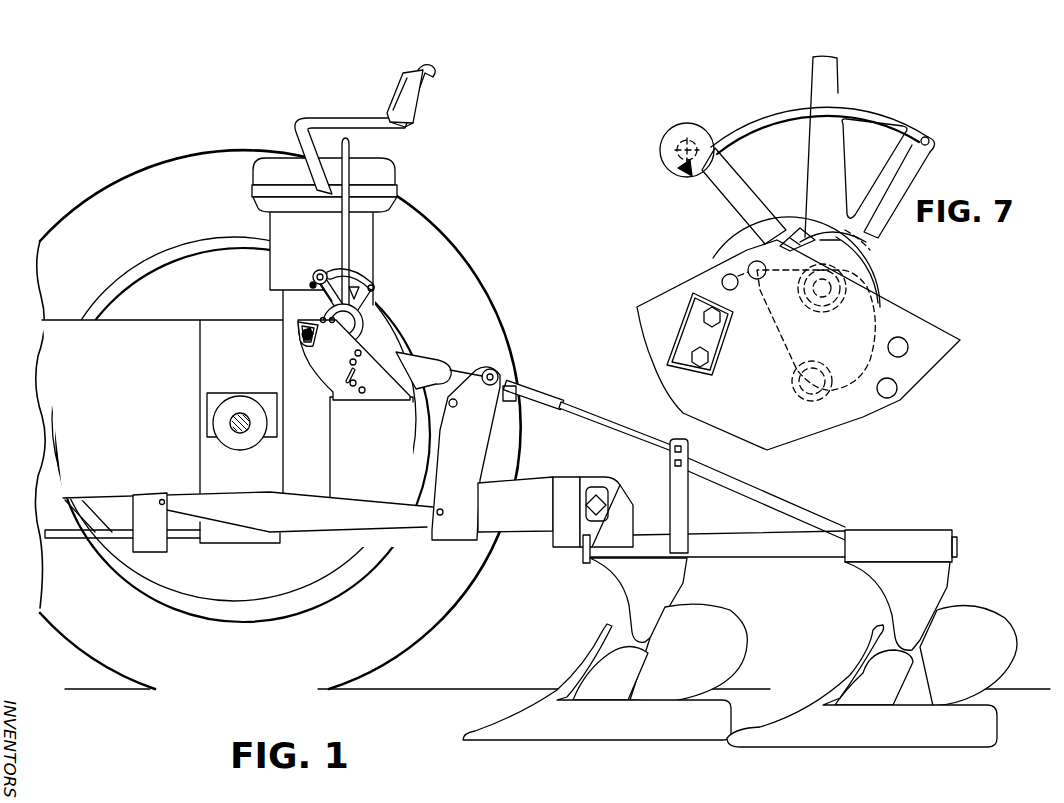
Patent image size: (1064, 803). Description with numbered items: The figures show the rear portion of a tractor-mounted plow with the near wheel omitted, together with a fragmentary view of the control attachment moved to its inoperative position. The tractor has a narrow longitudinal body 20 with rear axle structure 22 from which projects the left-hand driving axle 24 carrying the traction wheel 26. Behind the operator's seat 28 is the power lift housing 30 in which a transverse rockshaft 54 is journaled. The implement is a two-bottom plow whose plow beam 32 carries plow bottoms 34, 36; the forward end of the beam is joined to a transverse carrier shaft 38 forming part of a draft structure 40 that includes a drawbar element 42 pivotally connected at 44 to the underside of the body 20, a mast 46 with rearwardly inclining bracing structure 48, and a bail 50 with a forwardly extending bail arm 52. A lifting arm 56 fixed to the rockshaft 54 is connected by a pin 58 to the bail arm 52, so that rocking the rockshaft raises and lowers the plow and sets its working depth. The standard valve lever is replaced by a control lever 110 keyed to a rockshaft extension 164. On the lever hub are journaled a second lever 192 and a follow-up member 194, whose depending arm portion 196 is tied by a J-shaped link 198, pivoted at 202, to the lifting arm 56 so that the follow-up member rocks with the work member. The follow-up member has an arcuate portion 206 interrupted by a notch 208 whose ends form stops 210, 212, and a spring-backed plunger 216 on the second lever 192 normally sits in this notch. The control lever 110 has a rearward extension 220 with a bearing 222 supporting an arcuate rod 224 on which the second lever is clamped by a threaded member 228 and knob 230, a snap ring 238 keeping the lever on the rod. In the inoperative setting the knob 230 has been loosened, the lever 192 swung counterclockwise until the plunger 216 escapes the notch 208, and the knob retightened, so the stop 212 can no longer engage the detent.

In FIG. 1, the tractor body 20 is at (58, 433).
In FIG. 1, the rear axle structure 22 is at (240, 442).
In FIG. 1, the driving axle 24 is at (214, 420).
In FIG. 1, the traction wheel 26 is at (112, 202).
In FIG. 1, the operator's seat 28 is at (270, 222).
In FIG. 1, the power lift housing 30 is at (321, 440).
In FIG. 1, the plow beam 32 is at (773, 553).
In FIG. 1, the plow bottom 34 is at (744, 640).
In FIG. 1, the plow bottom 36 is at (992, 661).
In FIG. 1, the transverse carrier shaft 38 is at (603, 490).
In FIG. 1, the draft structure 40 is at (527, 537).
In FIG. 1, the drawbar element 42 is at (298, 526).
In FIG. 1, the pivotal connection 44 is at (164, 498).
In FIG. 1, the mast 46 is at (478, 447).
In FIG. 1, the bracing structure 48 is at (647, 434).
In FIG. 1, the bail 50 is at (487, 376).
In FIG. 1, the bail arm 52 is at (424, 356).
In FIG. 1, the rockshaft 54 is at (296, 327).
In FIG. 7, the rockshaft 54 is at (657, 320).
In FIG. 1, the lifting arm 56 is at (328, 363).
In FIG. 7, the lifting arm 56 is at (945, 338).
In FIG. 1, the pin 58 is at (340, 379).
In FIG. 1, the control lever 110 is at (351, 151).
In FIG. 7, the control lever 110 is at (818, 67).
In FIG. 7, the rockshaft extension 164 is at (815, 297).
In FIG. 1, the second lever 192 is at (323, 297).
In FIG. 7, the second lever 192 is at (757, 191).
In FIG. 1, the follow-up member 194 is at (354, 312).
In FIG. 7, the follow-up member 194 is at (884, 283).
In FIG. 7, the depending arm portion 196 is at (781, 353).
In FIG. 1, the J-shaped link 198 is at (368, 327).
In FIG. 7, the J-shaped link 198 is at (862, 272).
In FIG. 7, the pivotal connection 202 is at (722, 275).
In FIG. 7, the arcuate portion 206 is at (880, 256).
In FIG. 7, the notch 208 is at (818, 250).
In FIG. 7, the stop 210 is at (790, 246).
In FIG. 7, the stop 212 is at (818, 236).
In FIG. 1, the plunger 216 is at (328, 311).
In FIG. 7, the plunger 216 is at (799, 230).
In FIG. 7, the rearward extension 220 is at (902, 113).
In FIG. 7, the bearing 222 is at (938, 134).
In FIG. 1, the arcuate rod 224 is at (372, 280).
In FIG. 7, the arcuate rod 224 is at (800, 106).
In FIG. 7, the threaded member 228 is at (662, 150).
In FIG. 1, the knob 230 is at (323, 270).
In FIG. 7, the knob 230 is at (703, 125).
In FIG. 1, the snap ring 238 is at (312, 283).